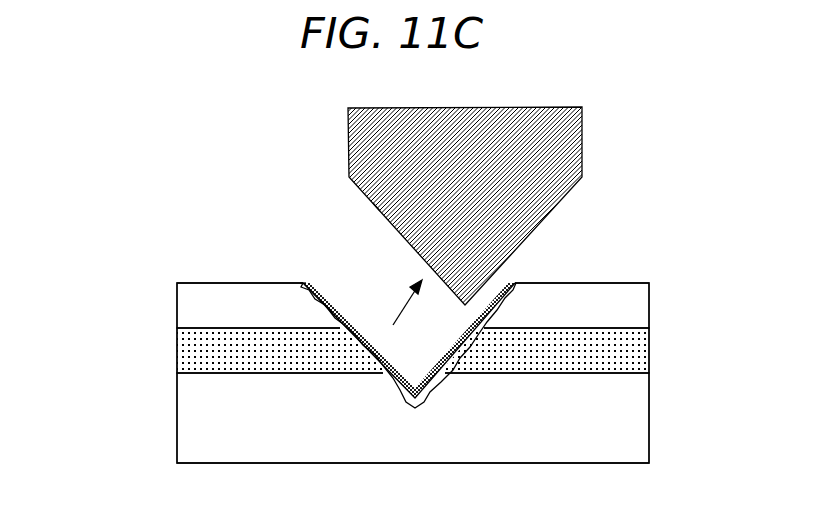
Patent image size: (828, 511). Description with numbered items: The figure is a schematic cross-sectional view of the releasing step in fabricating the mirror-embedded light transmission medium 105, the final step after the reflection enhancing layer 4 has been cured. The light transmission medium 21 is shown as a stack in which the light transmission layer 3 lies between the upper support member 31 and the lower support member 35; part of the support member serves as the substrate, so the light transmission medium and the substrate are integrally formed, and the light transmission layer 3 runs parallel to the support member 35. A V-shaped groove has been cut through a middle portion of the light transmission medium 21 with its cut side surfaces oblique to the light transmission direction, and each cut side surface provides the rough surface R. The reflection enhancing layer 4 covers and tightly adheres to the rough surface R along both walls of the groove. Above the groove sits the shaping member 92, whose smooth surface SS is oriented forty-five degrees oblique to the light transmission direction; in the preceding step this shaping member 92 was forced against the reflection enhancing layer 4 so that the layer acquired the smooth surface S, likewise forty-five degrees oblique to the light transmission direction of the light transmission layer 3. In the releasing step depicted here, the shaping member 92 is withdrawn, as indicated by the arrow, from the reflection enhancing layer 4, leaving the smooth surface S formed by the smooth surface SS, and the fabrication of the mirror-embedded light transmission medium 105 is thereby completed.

The light transmission medium 21 is at (112, 285).
The support member 31 is at (185, 303).
The light transmission layer 3 is at (185, 349).
The support member 35 is at (185, 416).
The reflection enhancing layer 4 is at (315, 285).
The shaping member 92 is at (582, 140).
The mirror-embedded light transmission medium 105 is at (158, 240).
The rough surface R is at (312, 283).
The smooth surface S is at (327, 297).
The smooth surface SS is at (373, 203).